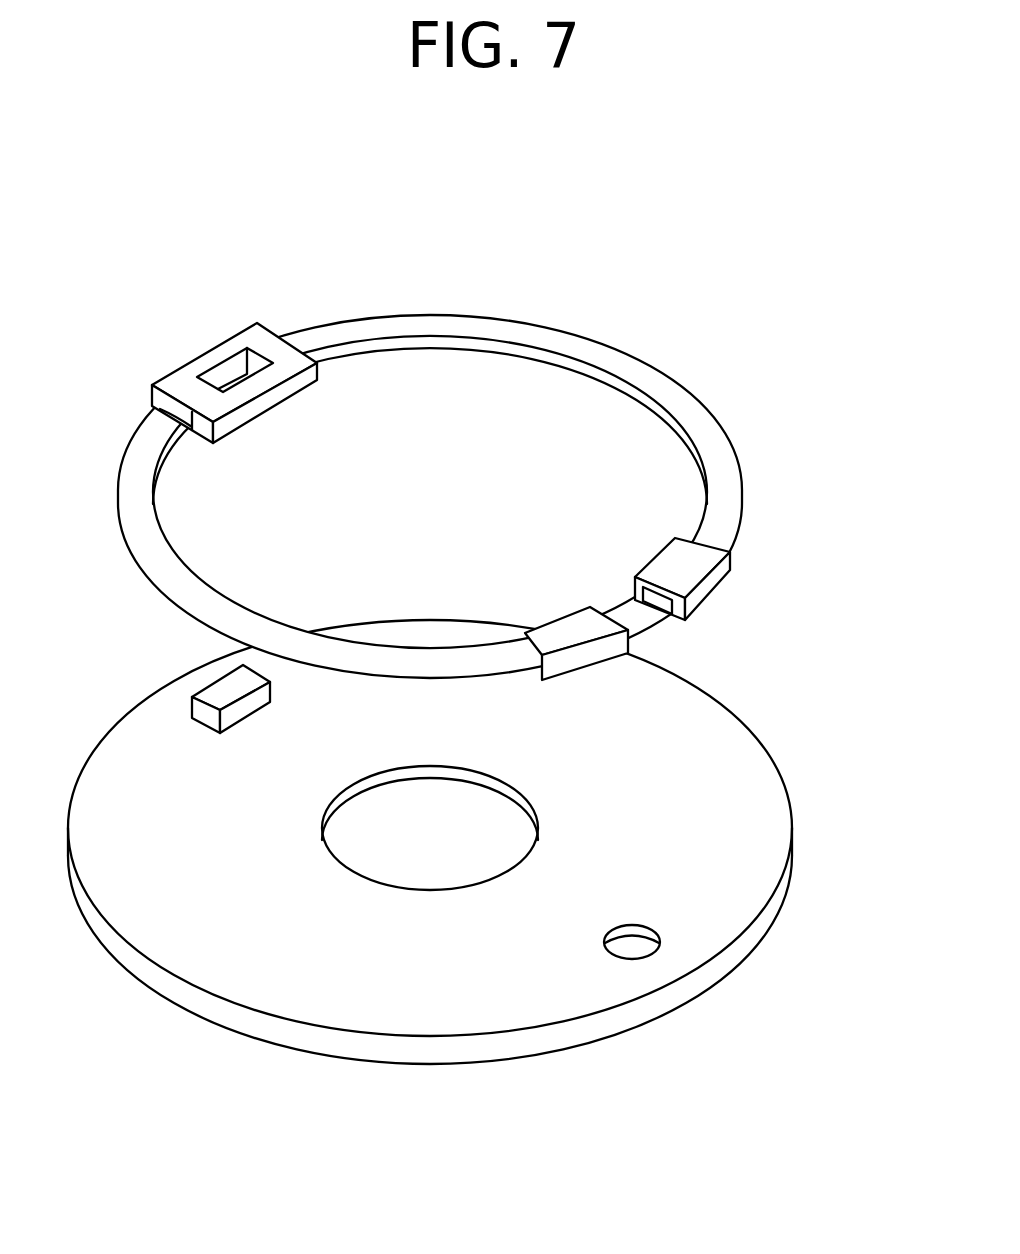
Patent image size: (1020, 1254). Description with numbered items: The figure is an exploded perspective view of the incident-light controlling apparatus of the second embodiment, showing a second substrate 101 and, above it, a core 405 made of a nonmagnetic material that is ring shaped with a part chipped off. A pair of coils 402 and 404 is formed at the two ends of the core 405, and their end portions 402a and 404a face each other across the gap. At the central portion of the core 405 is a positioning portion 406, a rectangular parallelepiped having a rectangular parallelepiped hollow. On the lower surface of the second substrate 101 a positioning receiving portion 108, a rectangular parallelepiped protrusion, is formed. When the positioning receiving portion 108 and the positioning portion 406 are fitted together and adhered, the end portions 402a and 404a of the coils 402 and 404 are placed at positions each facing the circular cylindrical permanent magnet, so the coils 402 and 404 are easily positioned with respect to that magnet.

The second substrate 101 is at (757, 807).
The positioning receiving portion 108 is at (203, 710).
The coil 402 is at (742, 588).
The end portion of coil 402a is at (673, 618).
The coil 404 is at (701, 670).
The end portion of coil 404a is at (627, 653).
The core 405 is at (678, 383).
The positioning portion 406 is at (207, 350).